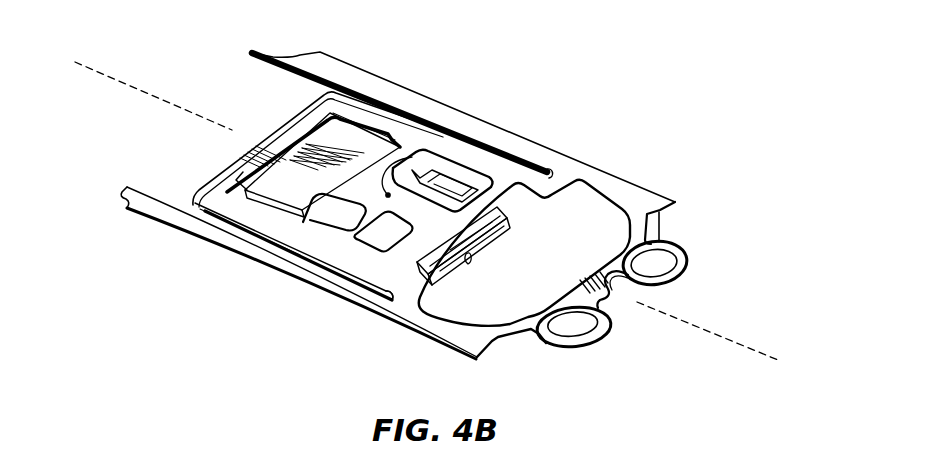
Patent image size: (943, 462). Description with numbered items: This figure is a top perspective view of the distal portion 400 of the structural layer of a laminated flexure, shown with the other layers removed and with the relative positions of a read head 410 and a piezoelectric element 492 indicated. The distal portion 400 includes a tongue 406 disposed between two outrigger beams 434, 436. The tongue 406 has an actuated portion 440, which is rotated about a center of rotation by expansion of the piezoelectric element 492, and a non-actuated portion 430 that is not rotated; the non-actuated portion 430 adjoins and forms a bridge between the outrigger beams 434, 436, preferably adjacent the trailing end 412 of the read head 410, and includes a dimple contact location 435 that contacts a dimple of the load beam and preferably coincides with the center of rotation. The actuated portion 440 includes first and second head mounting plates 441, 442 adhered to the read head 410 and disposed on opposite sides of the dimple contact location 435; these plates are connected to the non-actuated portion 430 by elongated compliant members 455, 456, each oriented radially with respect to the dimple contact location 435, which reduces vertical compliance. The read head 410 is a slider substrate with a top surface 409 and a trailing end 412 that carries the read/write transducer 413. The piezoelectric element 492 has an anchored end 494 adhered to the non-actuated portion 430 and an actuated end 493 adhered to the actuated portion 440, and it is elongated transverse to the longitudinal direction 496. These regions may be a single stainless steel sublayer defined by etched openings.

The distal portion of the structural layer 400 is at (686, 259).
The tongue 406 is at (290, 132).
The top surface 409 is at (358, 262).
The read head 410 is at (513, 232).
The trailing end 412 is at (487, 248).
The read/write transducer 413 is at (470, 262).
The non-actuated portion 430 is at (388, 295).
The outrigger beam 434 is at (423, 110).
The dimple contact location 435 is at (418, 127).
The outrigger beam 436 is at (280, 258).
The actuated portion 440 is at (198, 223).
The first head mounting plate 441 is at (467, 185).
The second head mounting plate 442 is at (258, 200).
The elongated compliant member 455 is at (453, 178).
The elongated compliant member 456 is at (327, 213).
The piezoelectric element 492 is at (363, 145).
The actuated end 493 is at (243, 172).
The anchored end 494 is at (373, 120).
The longitudinal direction 496 is at (110, 75).